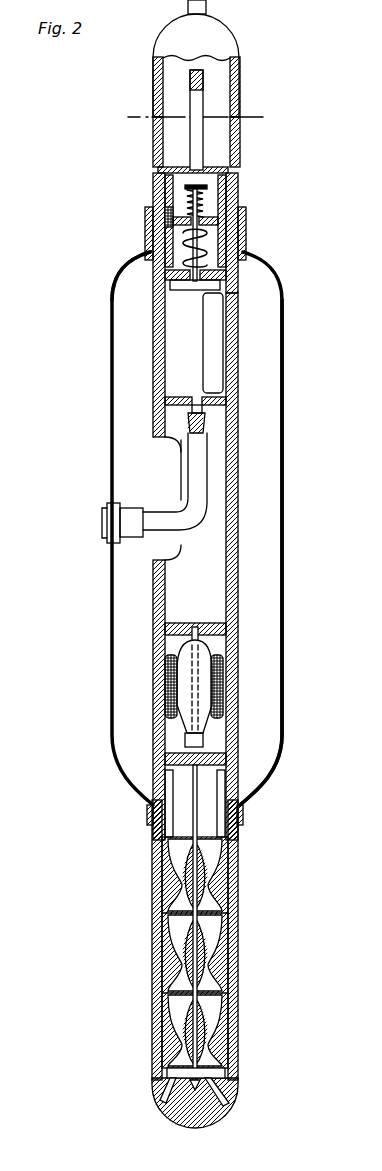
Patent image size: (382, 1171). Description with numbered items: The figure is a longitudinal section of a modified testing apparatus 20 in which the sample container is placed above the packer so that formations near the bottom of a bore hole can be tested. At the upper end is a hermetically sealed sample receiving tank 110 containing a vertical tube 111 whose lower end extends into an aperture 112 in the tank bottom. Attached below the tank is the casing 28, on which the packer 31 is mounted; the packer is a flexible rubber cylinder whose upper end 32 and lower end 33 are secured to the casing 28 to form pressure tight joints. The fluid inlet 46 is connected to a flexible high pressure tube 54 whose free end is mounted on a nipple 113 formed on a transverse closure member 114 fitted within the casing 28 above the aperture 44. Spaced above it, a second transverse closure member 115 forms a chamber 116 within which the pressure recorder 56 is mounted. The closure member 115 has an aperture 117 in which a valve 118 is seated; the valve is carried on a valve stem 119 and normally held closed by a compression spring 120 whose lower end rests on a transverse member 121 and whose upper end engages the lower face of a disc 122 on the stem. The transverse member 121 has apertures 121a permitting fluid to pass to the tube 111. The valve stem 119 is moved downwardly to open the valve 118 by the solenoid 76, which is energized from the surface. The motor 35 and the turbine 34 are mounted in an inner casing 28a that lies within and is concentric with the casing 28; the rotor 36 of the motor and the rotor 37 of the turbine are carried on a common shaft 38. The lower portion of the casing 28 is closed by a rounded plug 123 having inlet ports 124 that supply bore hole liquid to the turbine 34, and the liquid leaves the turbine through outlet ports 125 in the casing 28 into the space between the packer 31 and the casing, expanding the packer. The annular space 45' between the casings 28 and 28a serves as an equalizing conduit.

The testing apparatus 20 is at (91, 327).
The casing 28 is at (238, 462).
The casing 28a is at (232, 635).
The packer 31 is at (282, 397).
The upper end of packer 32 is at (246, 241).
The lower end of packer 33 is at (240, 821).
The turbine mechanism 34 is at (210, 942).
The electric motor 35 is at (210, 720).
The rotor of motor 36 is at (200, 688).
The rotor of turbine mechanism 37 is at (205, 972).
The common shaft 38 is at (192, 886).
The aperture 44 is at (181, 453).
The annular space 45' is at (275, 566).
The fluid inlet 46 is at (132, 508).
The flexible high pressure tube 54 is at (165, 527).
The pressure recorder 56 is at (215, 333).
The solenoid 76 is at (165, 268).
The sample receiving tank 110 is at (241, 78).
The vertical tube 111 is at (200, 101).
The aperture 112 is at (240, 151).
The nipple 113 is at (190, 422).
The transverse closure member 114 is at (165, 391).
The second transverse closure member 115 is at (200, 278).
The chamber 116 is at (180, 356).
The aperture 117 is at (185, 268).
The valve 118 is at (200, 288).
The valve stem 119 is at (218, 228).
The compression spring 120 is at (203, 205).
The transverse member 121 is at (230, 222).
The apertures 121a is at (168, 212).
The disc 122 is at (207, 187).
The rounded plug 123 is at (180, 1112).
The inlet ports 124 is at (222, 1093).
The outlet ports 125 is at (265, 772).